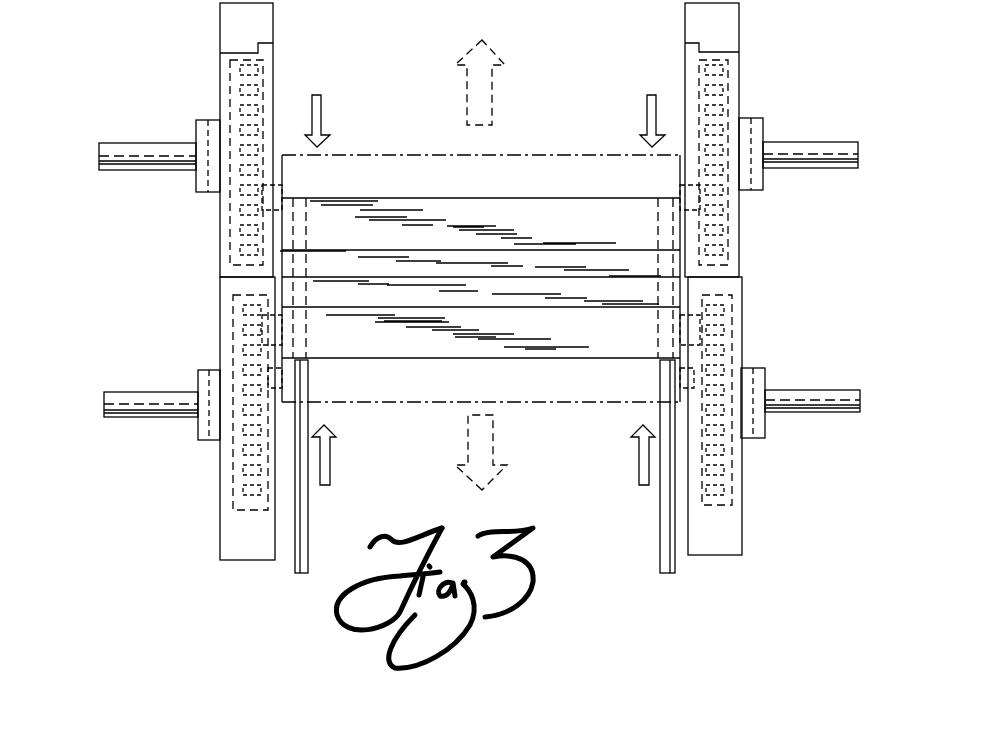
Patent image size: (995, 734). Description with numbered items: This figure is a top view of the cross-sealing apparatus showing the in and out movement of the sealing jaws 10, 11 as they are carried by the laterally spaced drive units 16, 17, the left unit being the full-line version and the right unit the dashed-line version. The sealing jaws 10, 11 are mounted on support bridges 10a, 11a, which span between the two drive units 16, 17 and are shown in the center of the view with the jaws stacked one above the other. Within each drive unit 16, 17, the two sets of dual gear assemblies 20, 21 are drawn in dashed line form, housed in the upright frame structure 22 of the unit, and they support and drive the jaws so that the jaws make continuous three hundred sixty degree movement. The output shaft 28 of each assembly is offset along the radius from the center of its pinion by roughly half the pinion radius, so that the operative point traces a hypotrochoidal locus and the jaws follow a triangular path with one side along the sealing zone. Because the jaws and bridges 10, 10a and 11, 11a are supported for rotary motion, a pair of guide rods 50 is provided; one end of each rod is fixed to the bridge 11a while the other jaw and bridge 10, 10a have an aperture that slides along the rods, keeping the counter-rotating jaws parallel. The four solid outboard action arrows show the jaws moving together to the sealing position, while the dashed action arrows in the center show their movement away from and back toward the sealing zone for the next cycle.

The sealing jaw 10 is at (480, 305).
The support bridge 10a is at (608, 348).
The sealing jaw 11 is at (430, 275).
The support bridge 11a is at (582, 235).
The drive unit 16 is at (143, 125).
The drive unit 17 is at (765, 95).
The gear assembly 20 is at (228, 482).
The gear assembly 21 is at (225, 215).
The frame 22 is at (237, 32).
The output shaft 28 is at (240, 338).
The guide rod 50 is at (303, 418).